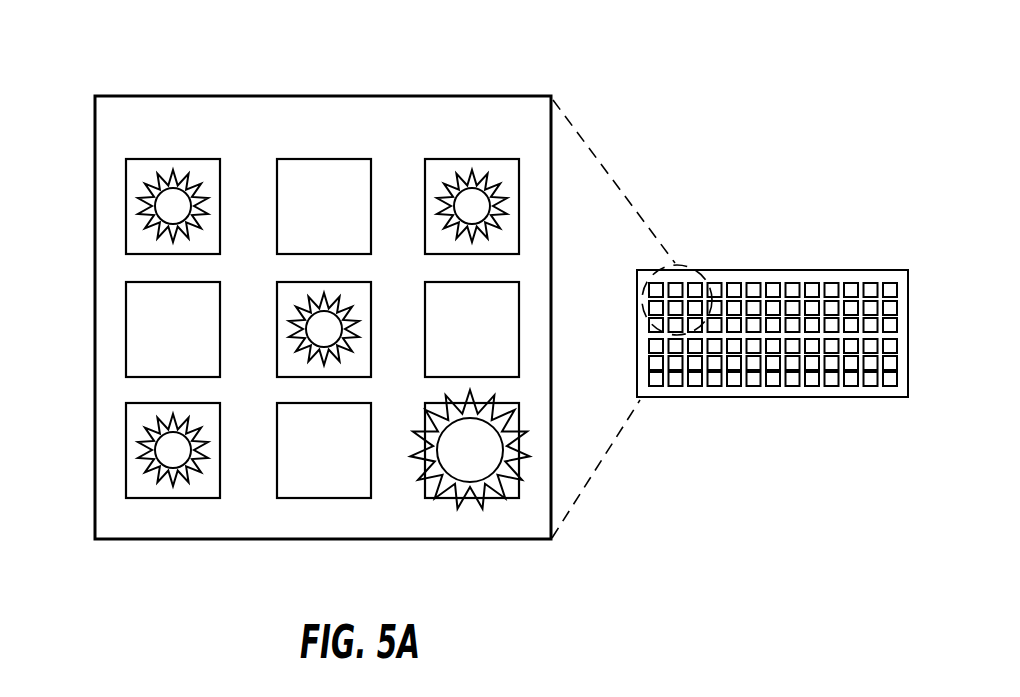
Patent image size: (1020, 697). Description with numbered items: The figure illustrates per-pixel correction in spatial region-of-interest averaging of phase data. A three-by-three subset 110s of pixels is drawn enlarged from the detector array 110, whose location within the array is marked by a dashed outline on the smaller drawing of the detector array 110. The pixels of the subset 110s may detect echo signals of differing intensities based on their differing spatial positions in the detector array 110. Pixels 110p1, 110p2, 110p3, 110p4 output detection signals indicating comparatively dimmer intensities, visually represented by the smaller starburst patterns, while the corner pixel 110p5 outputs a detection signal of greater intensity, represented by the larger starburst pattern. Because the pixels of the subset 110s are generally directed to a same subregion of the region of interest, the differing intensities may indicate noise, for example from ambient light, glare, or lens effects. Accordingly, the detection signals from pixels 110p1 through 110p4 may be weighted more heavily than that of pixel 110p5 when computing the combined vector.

The subset of pixels 110s is at (145, 100).
The pixel 110p1 is at (168, 159).
The pixel 110p2 is at (472, 159).
The pixel 110p3 is at (166, 498).
The pixel 110p4 is at (325, 283).
The corner pixel 110p5 is at (470, 497).
The detector array 110 is at (759, 461).